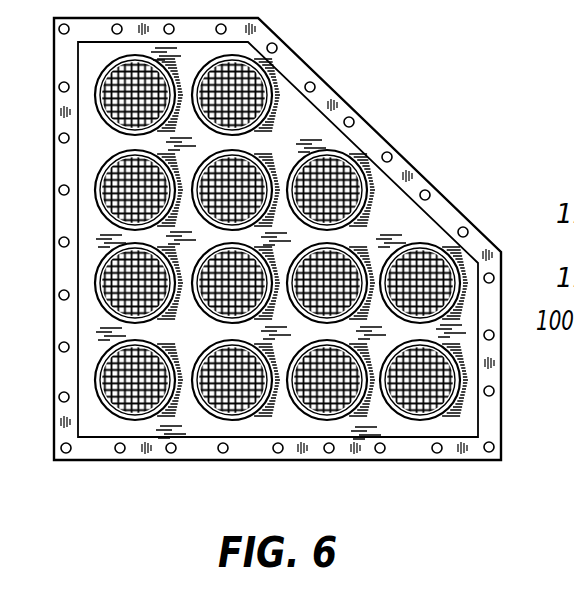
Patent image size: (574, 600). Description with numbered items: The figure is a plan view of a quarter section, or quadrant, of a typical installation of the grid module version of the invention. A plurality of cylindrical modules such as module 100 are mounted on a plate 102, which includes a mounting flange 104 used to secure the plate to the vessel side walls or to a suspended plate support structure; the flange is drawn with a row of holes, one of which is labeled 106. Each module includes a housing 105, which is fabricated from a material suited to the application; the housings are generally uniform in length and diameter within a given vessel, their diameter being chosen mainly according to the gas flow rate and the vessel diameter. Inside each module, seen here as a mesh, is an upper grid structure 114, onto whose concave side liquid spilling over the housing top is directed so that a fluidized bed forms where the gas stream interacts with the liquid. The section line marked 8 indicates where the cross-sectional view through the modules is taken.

The section line 8- 8 is at (97, 382).
The module 100 is at (359, 152).
The plate 102 is at (443, 470).
The mounting flange 104 is at (492, 425).
The housing 105 is at (372, 200).
The bolt hole 106 is at (495, 391).
The upper grid structure 114 is at (312, 412).